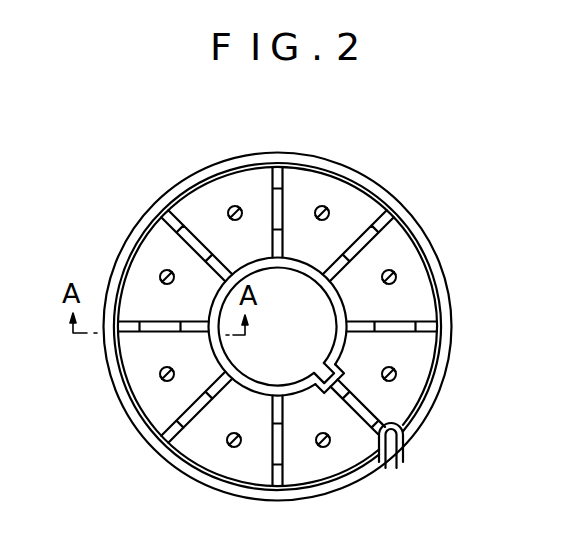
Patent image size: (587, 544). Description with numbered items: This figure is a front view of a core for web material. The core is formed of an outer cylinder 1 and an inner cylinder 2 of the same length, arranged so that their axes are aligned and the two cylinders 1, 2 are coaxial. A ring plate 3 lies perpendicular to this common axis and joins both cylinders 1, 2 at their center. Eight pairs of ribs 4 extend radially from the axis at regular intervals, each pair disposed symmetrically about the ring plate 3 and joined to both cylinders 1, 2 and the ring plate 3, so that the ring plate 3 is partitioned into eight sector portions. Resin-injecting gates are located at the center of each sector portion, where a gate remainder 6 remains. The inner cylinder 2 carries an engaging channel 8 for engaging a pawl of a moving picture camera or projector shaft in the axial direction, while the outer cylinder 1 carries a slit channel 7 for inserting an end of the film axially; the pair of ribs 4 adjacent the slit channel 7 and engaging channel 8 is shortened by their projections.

The outer cylinder 1 is at (437, 258).
The inner cylinder 2 is at (328, 289).
The ring plate 3 is at (213, 196).
The ribs 4 is at (378, 207).
The gate remainder 6 is at (162, 268).
The slit channel 7 is at (396, 467).
The engaging channel 8 is at (326, 376).